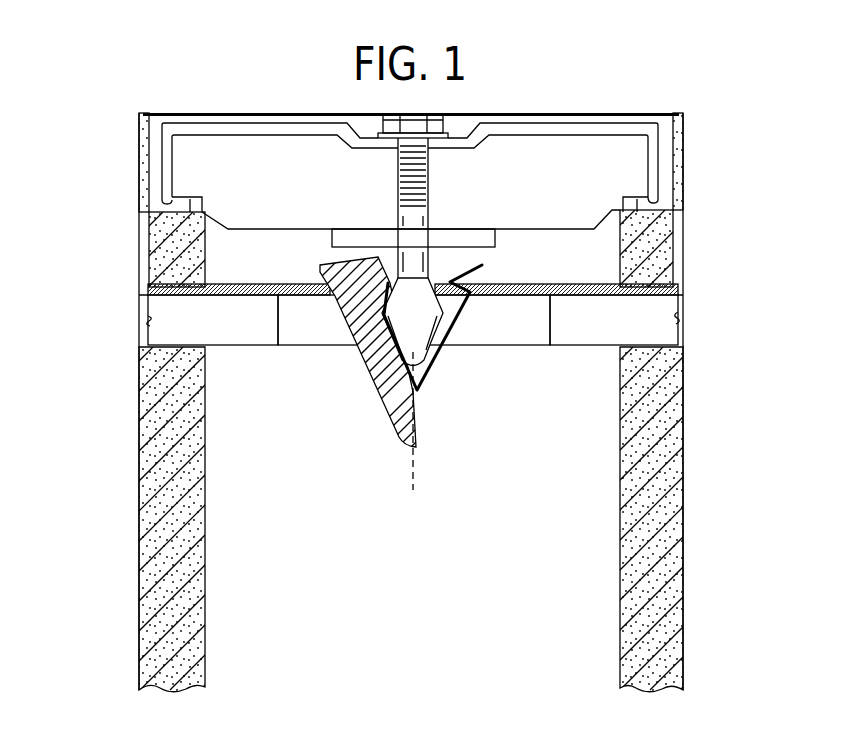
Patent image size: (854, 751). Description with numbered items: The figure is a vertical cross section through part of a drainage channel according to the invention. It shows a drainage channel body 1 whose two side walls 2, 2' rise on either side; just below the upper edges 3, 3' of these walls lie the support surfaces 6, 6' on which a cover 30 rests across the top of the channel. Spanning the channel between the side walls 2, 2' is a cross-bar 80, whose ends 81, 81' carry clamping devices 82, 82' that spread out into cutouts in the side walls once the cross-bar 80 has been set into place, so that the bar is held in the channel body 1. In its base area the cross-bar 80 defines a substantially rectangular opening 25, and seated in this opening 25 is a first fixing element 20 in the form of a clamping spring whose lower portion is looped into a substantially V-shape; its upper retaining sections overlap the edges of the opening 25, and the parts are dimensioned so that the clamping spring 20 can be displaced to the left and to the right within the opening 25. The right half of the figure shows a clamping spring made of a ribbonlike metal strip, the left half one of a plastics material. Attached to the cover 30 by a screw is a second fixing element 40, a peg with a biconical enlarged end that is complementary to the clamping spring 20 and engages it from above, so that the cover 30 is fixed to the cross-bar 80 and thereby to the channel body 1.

The drainage channel body 1 is at (106, 540).
The side wall 2 is at (271, 519).
The side wall 2' is at (572, 519).
The upper edge 3 is at (162, 200).
The upper edge 3' is at (650, 200).
The support surface 6 is at (191, 179).
The support surface 6' is at (624, 179).
The first fixing element 20 is at (437, 366).
The opening 25 is at (449, 283).
The cover 30 is at (269, 98).
The second fixing element 40 is at (452, 326).
The cross-bar 80 is at (288, 362).
The end of cross-bar 81 is at (117, 317).
The end of cross-bar 81' is at (712, 316).
The clamping device 82 is at (213, 342).
The clamping device 82' is at (614, 342).